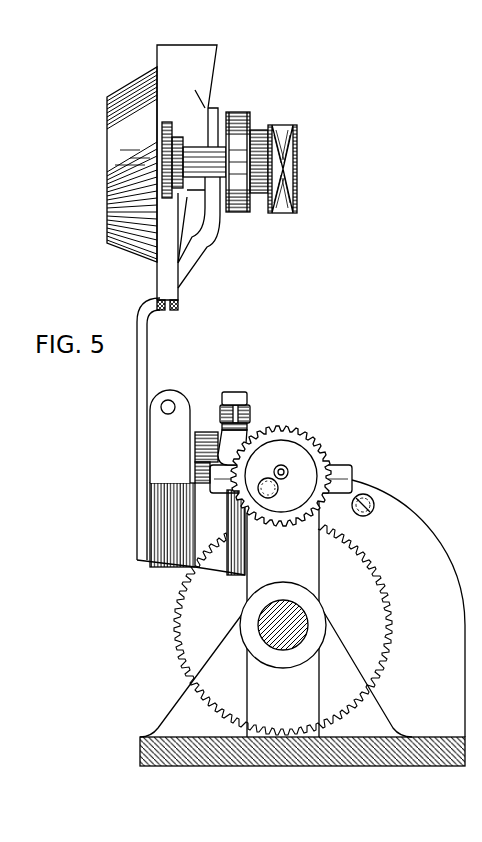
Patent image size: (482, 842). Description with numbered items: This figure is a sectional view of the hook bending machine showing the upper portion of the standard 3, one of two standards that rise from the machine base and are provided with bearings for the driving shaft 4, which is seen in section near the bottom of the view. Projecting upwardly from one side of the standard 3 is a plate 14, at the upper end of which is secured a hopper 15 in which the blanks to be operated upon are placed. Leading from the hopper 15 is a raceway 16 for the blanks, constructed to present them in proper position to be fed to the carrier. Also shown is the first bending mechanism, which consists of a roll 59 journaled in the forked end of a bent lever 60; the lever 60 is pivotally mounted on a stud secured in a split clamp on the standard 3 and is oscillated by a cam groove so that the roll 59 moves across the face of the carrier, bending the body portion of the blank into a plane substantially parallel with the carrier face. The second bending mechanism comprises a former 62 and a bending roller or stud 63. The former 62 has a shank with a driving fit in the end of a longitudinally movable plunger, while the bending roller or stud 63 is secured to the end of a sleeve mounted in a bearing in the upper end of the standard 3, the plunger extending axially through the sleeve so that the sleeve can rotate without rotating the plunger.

The standard 3 is at (319, 574).
The driving shaft 4 is at (307, 617).
The plate 14 is at (148, 352).
The hopper 15 is at (107, 97).
The raceway 16 is at (180, 285).
The roll 59 is at (250, 412).
The bent lever 60 is at (246, 394).
The former 62 is at (283, 470).
The bending roller or stud 63 is at (271, 498).